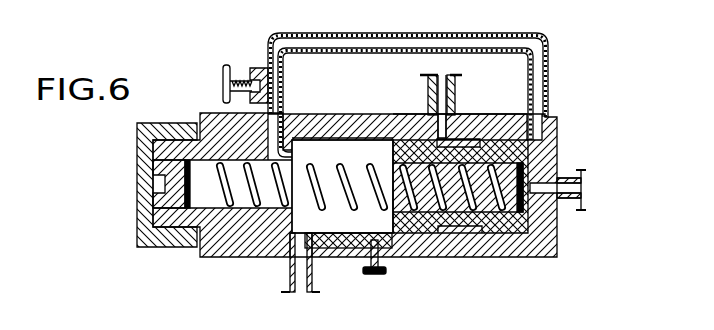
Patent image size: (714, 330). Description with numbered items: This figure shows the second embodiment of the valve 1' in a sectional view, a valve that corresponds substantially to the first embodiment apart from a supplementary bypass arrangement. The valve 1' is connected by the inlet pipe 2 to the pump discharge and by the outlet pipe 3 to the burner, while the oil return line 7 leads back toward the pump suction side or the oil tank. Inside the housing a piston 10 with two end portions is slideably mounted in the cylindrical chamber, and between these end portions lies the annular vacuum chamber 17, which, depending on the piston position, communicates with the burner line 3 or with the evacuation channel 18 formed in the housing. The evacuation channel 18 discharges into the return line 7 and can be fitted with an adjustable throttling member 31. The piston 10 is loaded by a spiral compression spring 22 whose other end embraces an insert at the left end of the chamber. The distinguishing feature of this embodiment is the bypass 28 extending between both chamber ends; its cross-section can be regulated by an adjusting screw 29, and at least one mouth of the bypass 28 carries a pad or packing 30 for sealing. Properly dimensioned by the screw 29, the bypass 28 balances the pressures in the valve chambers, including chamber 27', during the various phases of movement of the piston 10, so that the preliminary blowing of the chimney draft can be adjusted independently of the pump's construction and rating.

The valve 1' is at (167, 211).
The valve inlet pipe 2 is at (583, 196).
The valve outlet pipe 3 is at (452, 95).
The oil return line 7 is at (312, 293).
The piston 10 is at (391, 155).
The annular vacuum chamber 17 is at (464, 234).
The evacuation channel 18 is at (340, 250).
The spiral compression spring 22 is at (313, 198).
The valve chamber 27' is at (409, 100).
The bypass 28 is at (549, 52).
The adjusting screw 29 is at (223, 68).
The pad or packing 30 is at (300, 138).
The adjustable throttling member 31 is at (385, 273).